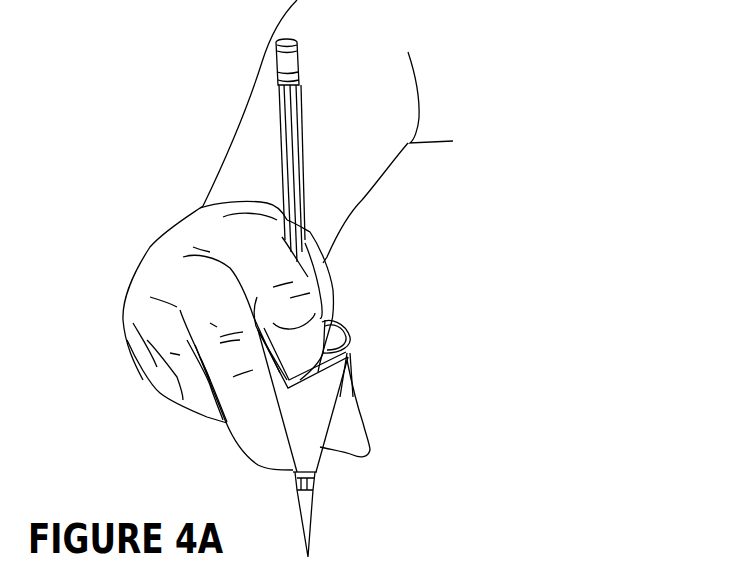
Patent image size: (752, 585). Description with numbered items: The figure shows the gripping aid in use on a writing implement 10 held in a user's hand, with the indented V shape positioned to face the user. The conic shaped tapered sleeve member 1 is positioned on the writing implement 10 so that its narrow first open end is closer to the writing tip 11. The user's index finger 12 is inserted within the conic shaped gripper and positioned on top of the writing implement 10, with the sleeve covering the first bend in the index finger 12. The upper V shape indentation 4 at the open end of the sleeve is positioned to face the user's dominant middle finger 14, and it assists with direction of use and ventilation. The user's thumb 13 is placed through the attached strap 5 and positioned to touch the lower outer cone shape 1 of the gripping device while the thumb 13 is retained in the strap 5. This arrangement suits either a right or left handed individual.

The writing implement 10 is at (280, 115).
The index finger 12 is at (308, 361).
The strap 5 is at (355, 360).
The V shape indentation 4 is at (288, 387).
The conic shaped tapered sleeve member 1 is at (317, 428).
The middle finger 14 is at (267, 432).
The thumb 13 is at (347, 433).
The writing tip 11 is at (310, 547).